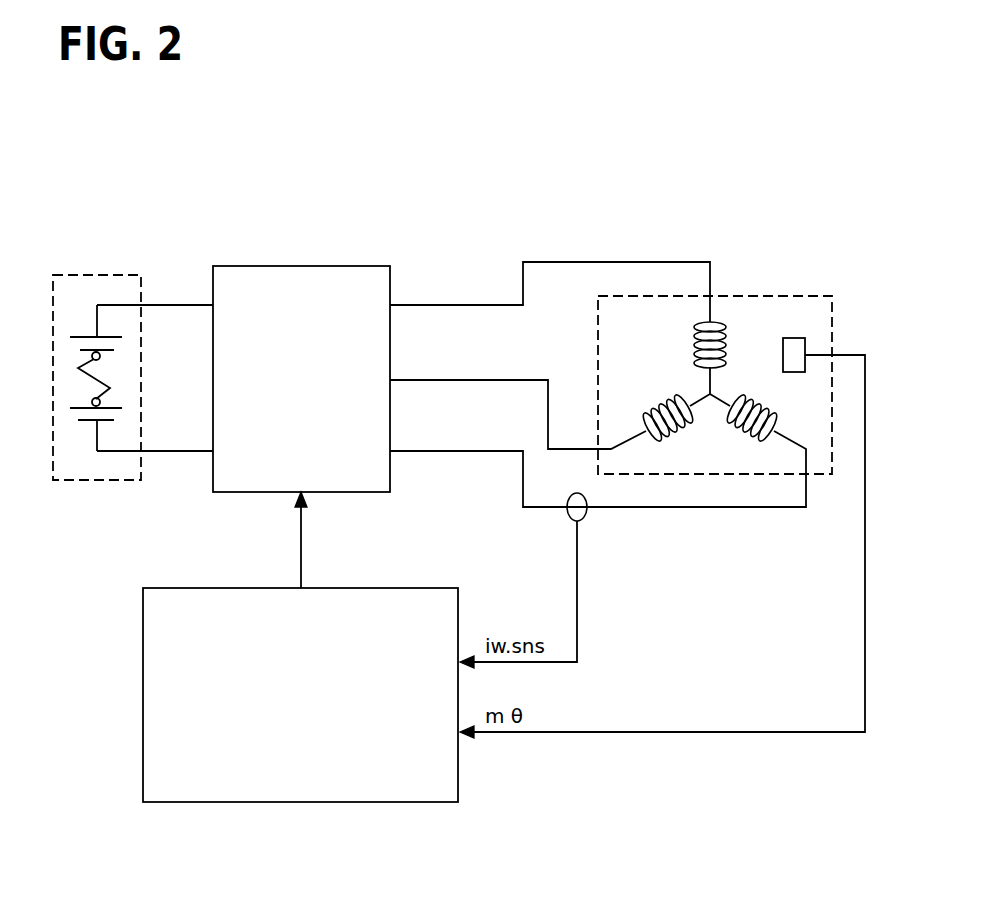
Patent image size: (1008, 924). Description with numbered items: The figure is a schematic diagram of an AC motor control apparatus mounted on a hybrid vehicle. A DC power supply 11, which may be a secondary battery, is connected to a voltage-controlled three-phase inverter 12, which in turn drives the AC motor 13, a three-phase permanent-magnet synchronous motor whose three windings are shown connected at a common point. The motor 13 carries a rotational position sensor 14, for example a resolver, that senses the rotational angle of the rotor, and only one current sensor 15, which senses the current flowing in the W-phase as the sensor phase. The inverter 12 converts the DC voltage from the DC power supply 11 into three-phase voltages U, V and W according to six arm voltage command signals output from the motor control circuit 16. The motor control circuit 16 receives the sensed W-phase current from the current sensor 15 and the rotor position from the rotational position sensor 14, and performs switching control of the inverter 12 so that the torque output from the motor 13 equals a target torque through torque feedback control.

The DC power supply 11 is at (90, 275).
The inverter 12 is at (303, 266).
The AC motor 13 is at (780, 296).
The rotational position sensor 14 is at (795, 338).
The current sensor 15 is at (583, 519).
The motor control circuit 16 is at (297, 802).